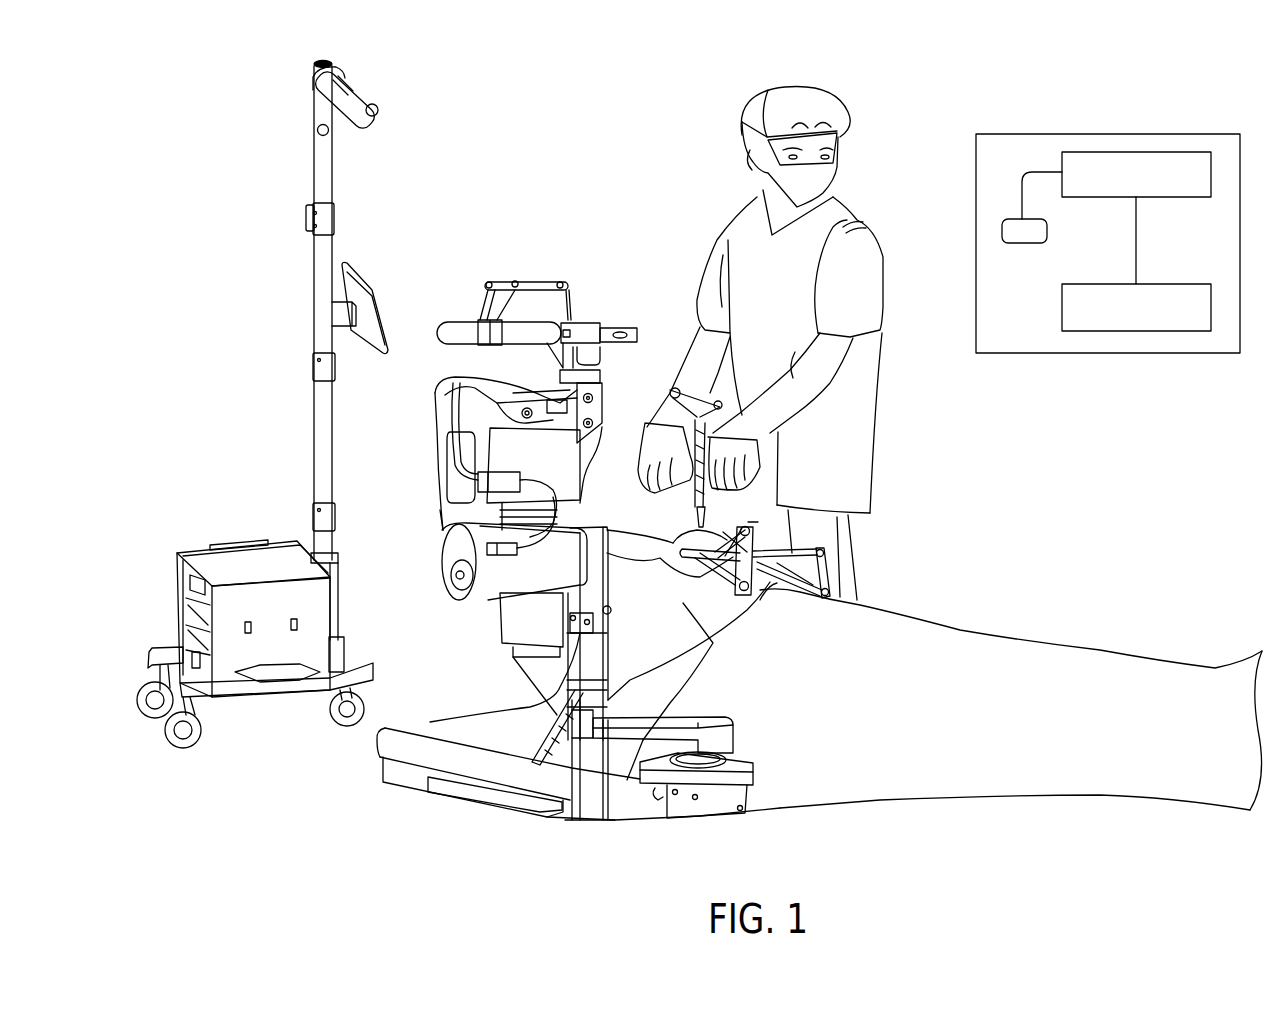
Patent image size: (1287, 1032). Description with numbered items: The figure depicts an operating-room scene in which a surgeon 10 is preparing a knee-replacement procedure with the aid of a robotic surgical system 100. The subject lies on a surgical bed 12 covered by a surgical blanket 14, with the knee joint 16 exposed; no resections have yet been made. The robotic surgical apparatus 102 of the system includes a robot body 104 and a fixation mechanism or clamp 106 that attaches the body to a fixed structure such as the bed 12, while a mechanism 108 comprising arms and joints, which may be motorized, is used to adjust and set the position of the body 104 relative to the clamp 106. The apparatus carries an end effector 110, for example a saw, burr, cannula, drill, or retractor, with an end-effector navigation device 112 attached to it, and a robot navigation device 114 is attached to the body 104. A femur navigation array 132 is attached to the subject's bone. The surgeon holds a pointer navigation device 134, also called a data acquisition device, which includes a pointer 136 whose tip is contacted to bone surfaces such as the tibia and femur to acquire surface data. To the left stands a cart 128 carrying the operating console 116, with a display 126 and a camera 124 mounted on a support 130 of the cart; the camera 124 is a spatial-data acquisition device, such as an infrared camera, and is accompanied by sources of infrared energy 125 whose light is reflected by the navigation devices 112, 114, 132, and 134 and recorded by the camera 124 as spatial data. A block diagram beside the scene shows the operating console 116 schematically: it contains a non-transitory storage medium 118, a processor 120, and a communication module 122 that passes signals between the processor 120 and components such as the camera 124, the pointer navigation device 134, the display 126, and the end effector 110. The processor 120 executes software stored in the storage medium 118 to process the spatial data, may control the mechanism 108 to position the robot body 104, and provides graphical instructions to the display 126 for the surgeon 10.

The robotic surgical system 100 is at (533, 75).
The surgeon 10 is at (793, 87).
The surgical bed 12 is at (378, 743).
The surgical blanket 14 is at (1033, 648).
The knee joint 16 is at (753, 520).
The robotic surgical apparatus 102 is at (476, 620).
The robot body 104 is at (443, 546).
The fixation mechanism (clamp) 106 is at (706, 782).
The mechanism comprising arms and joints 108 is at (581, 802).
The end effector 110 is at (618, 322).
The end-effector navigation device 112 is at (488, 284).
The robot navigation device 114 is at (770, 575).
The operating console 116 is at (198, 552).
The non-transitory storage medium 118 is at (1180, 283).
The processor 120 is at (1093, 200).
The communication module 122 is at (1017, 246).
The camera 124 is at (362, 82).
The sources of infrared energy 125 is at (317, 129).
The display 126 is at (371, 282).
The cart 128 is at (238, 702).
The support 130 is at (321, 158).
The femur navigation array 132 is at (832, 577).
The pointer navigation device (data acquisition device) 134 is at (688, 383).
The pointer 136 is at (695, 516).